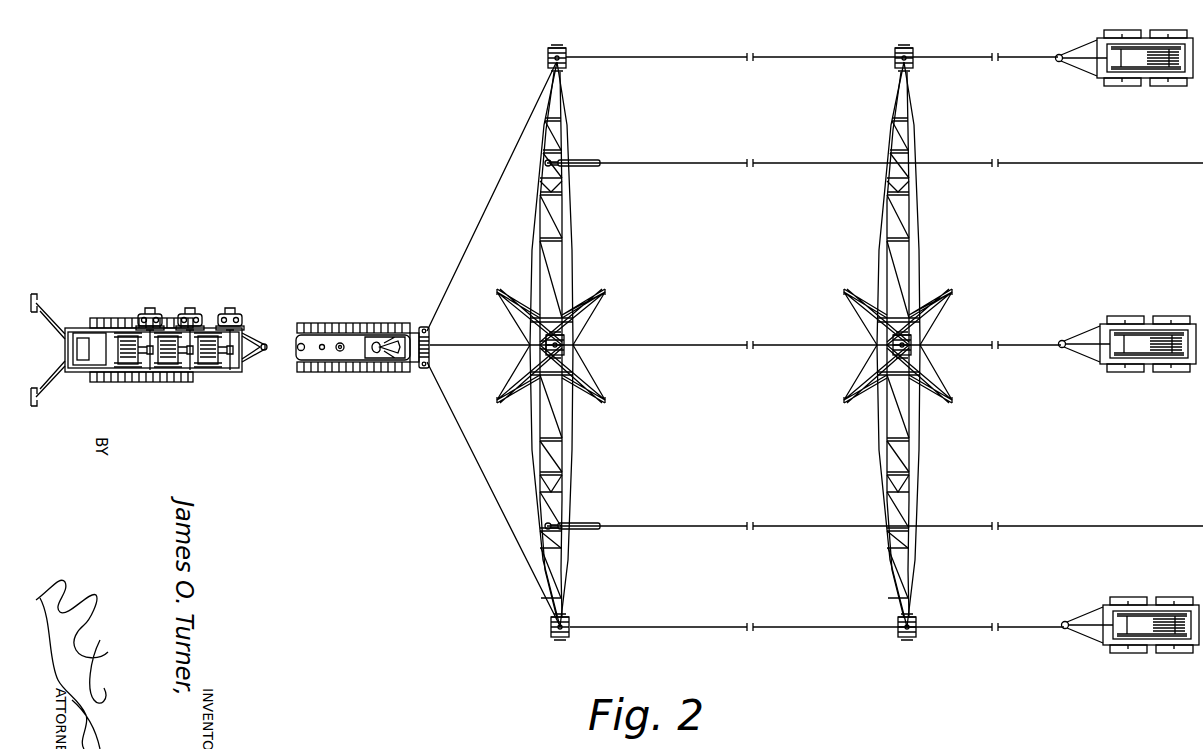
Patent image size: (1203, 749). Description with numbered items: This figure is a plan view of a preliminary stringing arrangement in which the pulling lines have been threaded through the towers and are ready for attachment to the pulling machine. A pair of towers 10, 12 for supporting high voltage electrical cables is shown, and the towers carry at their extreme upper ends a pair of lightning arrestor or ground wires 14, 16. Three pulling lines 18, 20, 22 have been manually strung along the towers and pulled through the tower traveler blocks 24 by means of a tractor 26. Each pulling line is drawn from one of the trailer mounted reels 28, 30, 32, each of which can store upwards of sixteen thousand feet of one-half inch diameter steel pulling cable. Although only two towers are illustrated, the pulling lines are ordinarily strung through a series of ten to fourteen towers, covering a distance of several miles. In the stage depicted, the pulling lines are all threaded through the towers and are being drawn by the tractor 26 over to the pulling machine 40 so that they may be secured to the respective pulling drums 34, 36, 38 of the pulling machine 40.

The tower 10 is at (575, 243).
The tower 12 is at (921, 243).
The ground wire 14 is at (684, 163).
The ground wire 16 is at (675, 526).
The pulling line 18 is at (690, 57).
The pulling line 20 is at (668, 345).
The pulling line 22 is at (668, 627).
The traveler block 24 is at (563, 48).
The tractor 26 is at (318, 323).
The trailer mounted reel 28 is at (1100, 68).
The trailer mounted reel 30 is at (1098, 326).
The trailer mounted reel 32 is at (1118, 608).
The pulling drum 34 is at (128, 345).
The pulling drum 36 is at (170, 366).
The pulling drum 38 is at (214, 366).
The pulling machine 40 is at (172, 320).